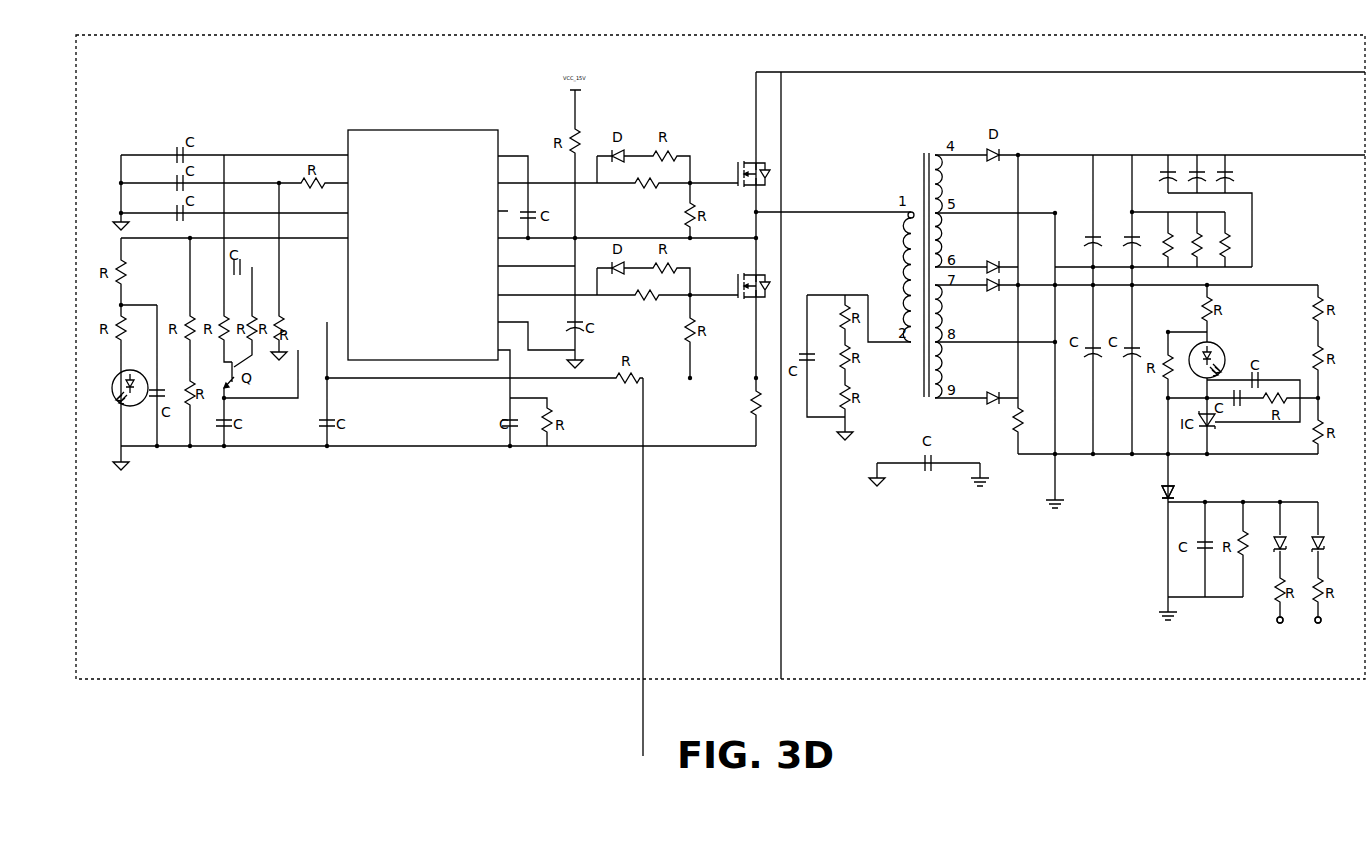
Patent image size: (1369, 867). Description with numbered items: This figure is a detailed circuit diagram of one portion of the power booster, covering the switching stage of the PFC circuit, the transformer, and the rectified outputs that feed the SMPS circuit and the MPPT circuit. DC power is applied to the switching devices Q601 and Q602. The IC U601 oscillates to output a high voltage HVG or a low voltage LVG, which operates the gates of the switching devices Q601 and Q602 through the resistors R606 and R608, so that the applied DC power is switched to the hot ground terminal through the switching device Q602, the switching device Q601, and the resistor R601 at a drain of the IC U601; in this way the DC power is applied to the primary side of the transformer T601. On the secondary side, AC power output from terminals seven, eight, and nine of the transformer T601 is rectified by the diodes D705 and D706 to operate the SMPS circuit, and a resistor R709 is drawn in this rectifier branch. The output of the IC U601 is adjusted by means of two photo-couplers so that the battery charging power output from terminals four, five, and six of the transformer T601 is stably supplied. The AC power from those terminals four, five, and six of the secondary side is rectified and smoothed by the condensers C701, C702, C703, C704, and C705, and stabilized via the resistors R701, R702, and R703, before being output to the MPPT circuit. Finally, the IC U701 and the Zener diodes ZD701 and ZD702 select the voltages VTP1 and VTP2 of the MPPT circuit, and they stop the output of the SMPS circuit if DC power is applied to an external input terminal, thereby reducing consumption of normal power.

The IC U601 is at (423, 231).
The switching device Q601 is at (735, 276).
The switching device Q602 is at (735, 164).
The resistor R606 is at (643, 194).
The resistor R608 is at (643, 306).
The resistor R601 is at (729, 403).
The transformer T601 is at (903, 268).
The diode D705 is at (983, 297).
The diode D706 is at (978, 409).
The resistor R709 is at (1029, 420).
The condenser C701 is at (1080, 189).
The condenser C702 is at (1132, 176).
The condenser C703 is at (1168, 144).
The condenser C704 is at (1197, 144).
The condenser C705 is at (1225, 144).
The resistor R701 is at (1177, 246).
The resistor R702 is at (1235, 246).
The resistor R703 is at (1206, 246).
The IC U701 is at (1135, 488).
The Zener diode ZD701 is at (1269, 545).
The Zener diode ZD702 is at (1331, 545).
The voltage VTP1 is at (1266, 637).
The voltage VTP2 is at (1323, 637).